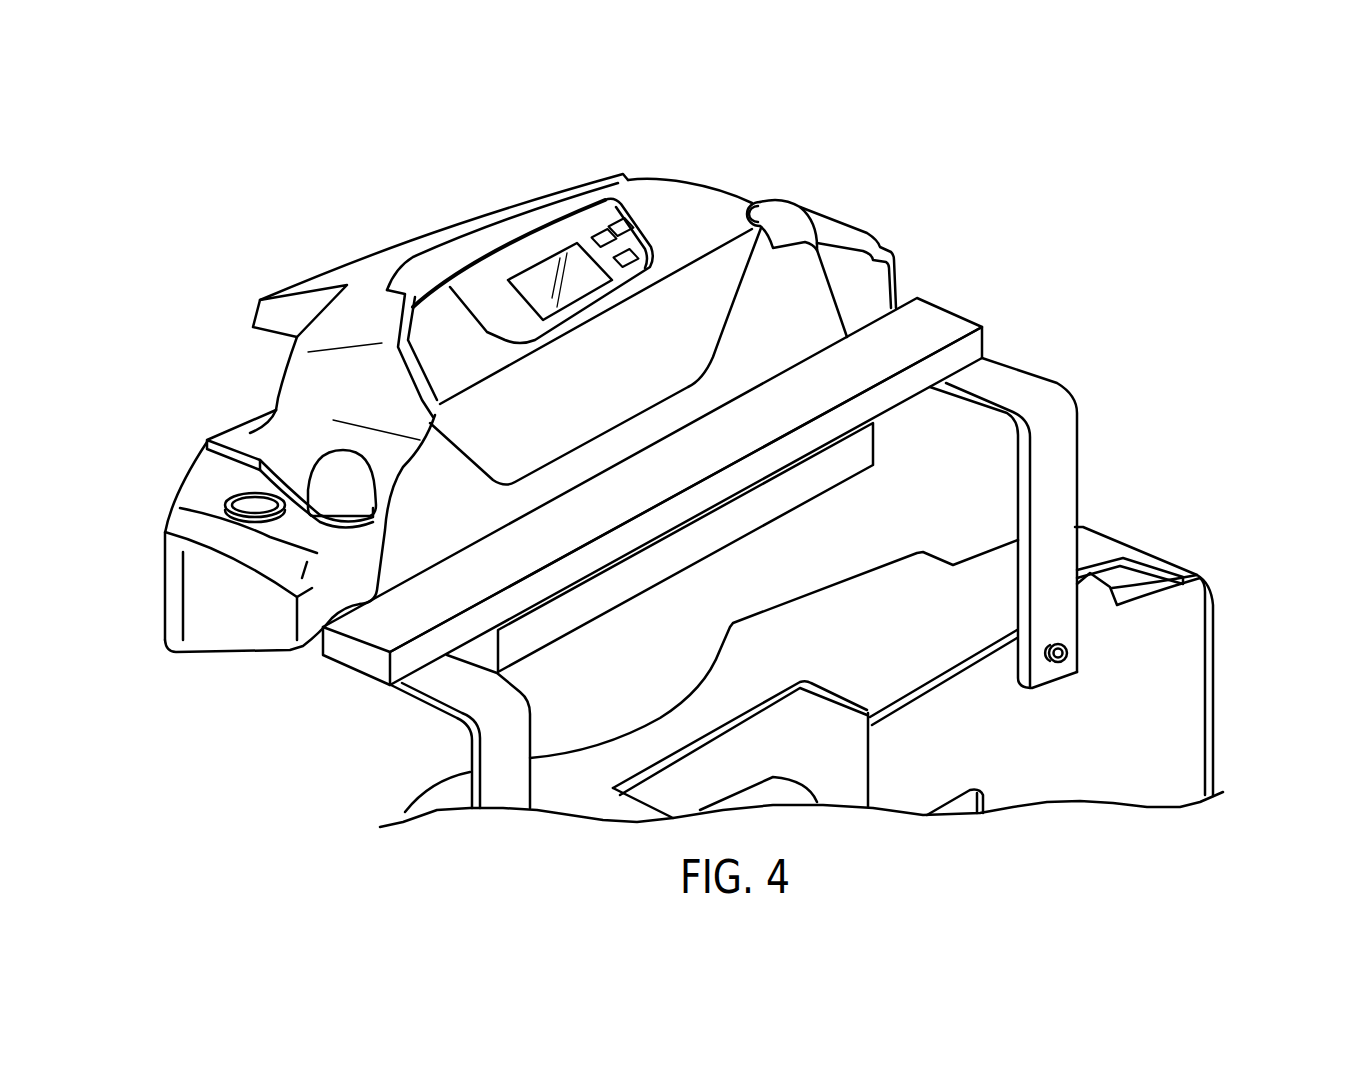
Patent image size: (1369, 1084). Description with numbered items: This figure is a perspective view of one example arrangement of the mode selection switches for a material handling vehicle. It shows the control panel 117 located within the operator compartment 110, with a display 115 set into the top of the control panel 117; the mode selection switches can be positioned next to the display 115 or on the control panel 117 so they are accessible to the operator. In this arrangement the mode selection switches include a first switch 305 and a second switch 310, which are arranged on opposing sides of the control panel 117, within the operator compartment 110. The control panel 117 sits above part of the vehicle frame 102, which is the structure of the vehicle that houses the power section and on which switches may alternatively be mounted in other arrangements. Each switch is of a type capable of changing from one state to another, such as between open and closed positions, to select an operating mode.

The control panel 117 is at (535, 243).
The display 115 is at (578, 255).
The first switch 305 is at (750, 204).
The second switch 310 is at (238, 500).
The vehicle frame 102 is at (1143, 647).
The operator compartment 110 is at (1162, 702).